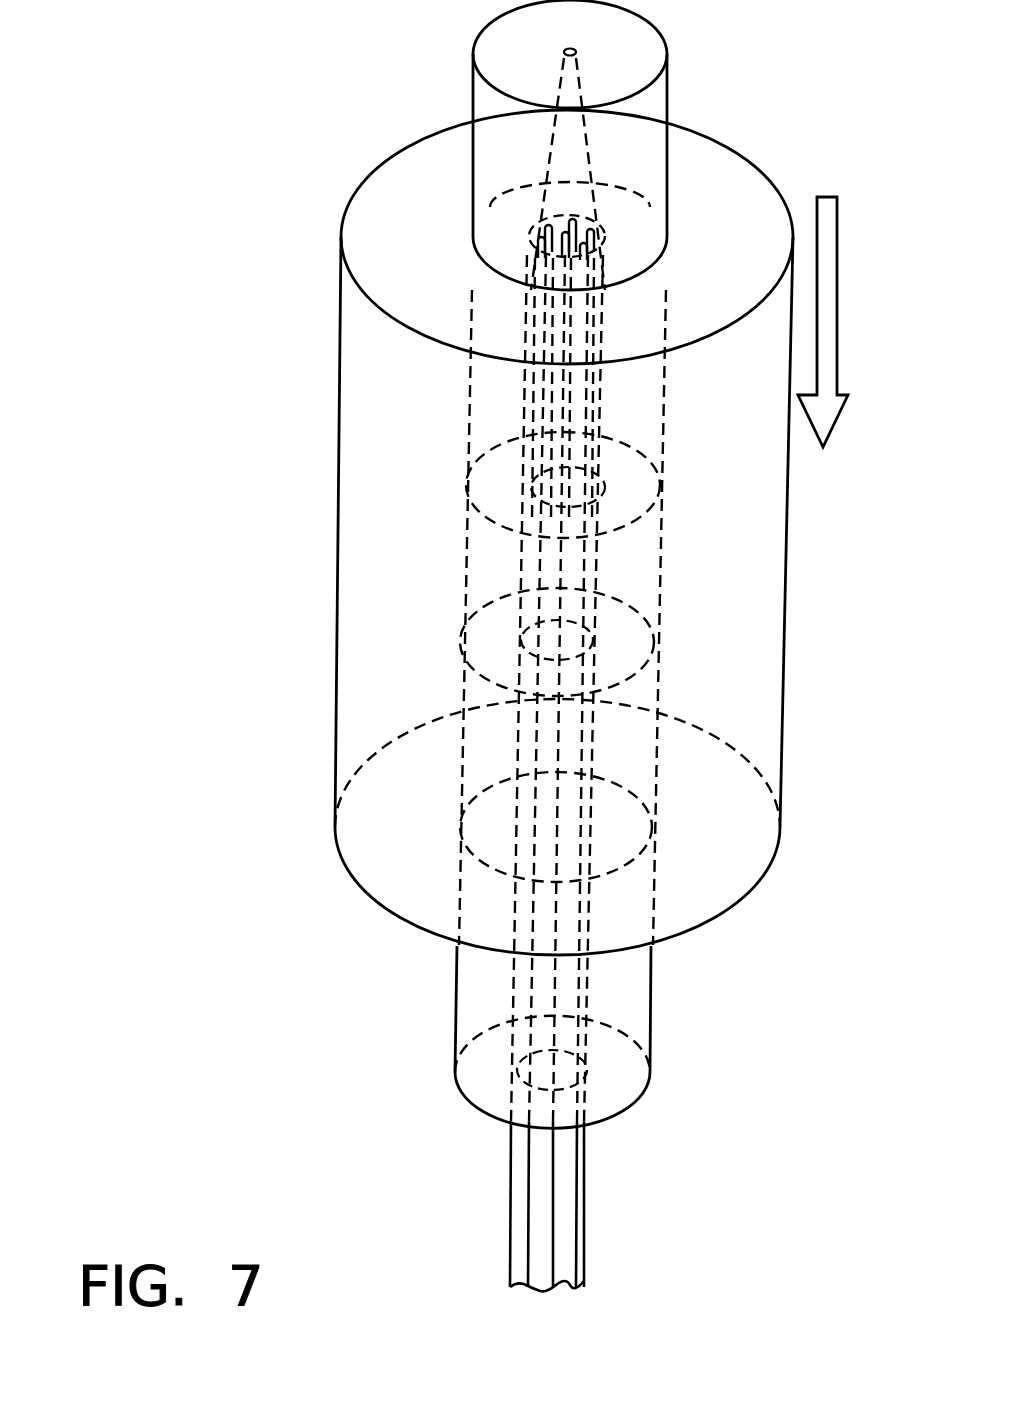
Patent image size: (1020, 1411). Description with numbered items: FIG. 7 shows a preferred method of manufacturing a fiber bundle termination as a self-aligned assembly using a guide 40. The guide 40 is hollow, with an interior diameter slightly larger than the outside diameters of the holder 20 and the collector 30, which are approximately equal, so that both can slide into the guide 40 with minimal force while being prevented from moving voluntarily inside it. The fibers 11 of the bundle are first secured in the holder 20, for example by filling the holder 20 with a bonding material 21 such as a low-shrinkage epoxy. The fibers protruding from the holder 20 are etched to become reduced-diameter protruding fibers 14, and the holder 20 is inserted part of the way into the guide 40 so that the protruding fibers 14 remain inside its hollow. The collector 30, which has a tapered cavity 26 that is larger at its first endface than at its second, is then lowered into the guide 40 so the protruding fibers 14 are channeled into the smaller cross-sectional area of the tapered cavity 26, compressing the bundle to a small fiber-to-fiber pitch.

The fibers 11 is at (568, 1222).
The protruding fibers 14 is at (495, 569).
The holder 20 is at (485, 994).
The bonding material 21 is at (622, 650).
The tapered cavity 26 is at (596, 121).
The collector 30 is at (490, 106).
The guide 40 is at (362, 680).